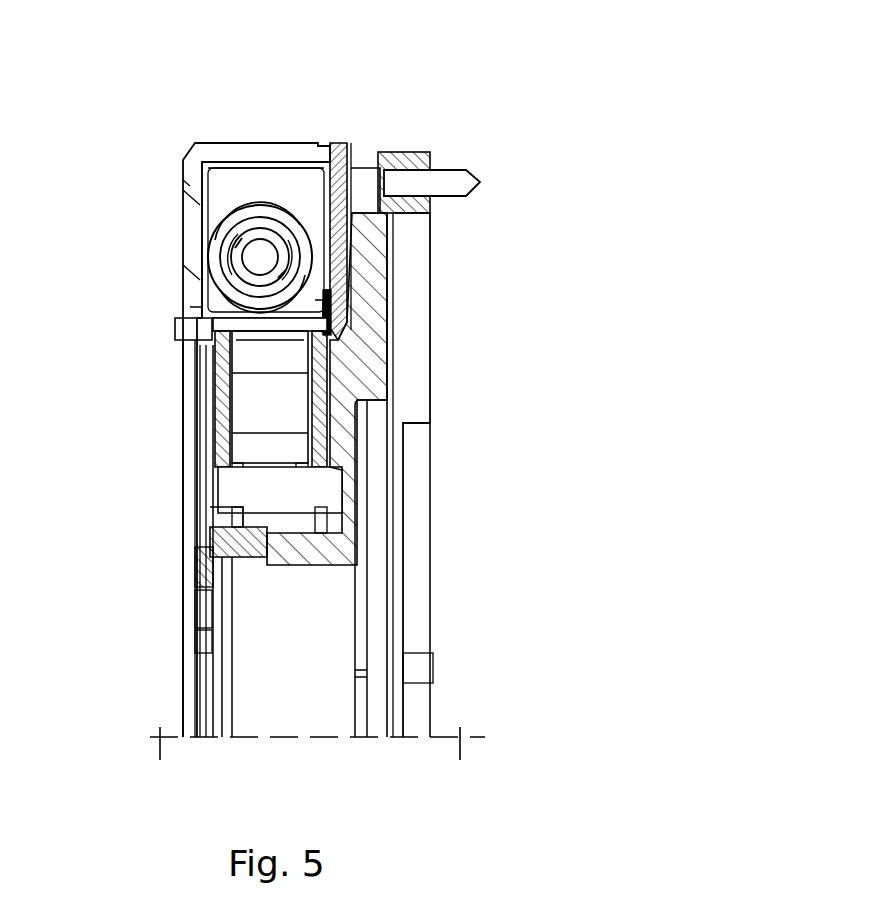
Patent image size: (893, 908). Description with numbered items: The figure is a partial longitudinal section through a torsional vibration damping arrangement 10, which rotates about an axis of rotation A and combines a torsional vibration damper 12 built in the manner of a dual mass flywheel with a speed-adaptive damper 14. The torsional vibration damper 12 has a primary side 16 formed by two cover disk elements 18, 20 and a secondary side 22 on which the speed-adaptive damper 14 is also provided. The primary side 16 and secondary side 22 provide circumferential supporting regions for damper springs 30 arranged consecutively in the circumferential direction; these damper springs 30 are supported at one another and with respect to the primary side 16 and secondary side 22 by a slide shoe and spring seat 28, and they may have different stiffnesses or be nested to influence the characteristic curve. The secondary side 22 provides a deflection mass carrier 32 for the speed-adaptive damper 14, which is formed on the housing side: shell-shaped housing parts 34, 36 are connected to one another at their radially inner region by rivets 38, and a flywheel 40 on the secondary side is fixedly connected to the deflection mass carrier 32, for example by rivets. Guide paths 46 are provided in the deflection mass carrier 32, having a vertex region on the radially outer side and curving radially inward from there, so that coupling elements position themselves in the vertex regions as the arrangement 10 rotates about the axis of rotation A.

The torsional vibration damping arrangement 10 is at (425, 102).
The torsional vibration damper 12 is at (150, 160).
The speed-adaptive damper 14 is at (343, 386).
The primary side 16 is at (156, 274).
The cover disk element 18 is at (195, 211).
The cover disk element 20 is at (340, 150).
The secondary side 22 is at (193, 486).
The slide shoe and spring seat 28 is at (245, 178).
The damper spring 30 is at (265, 215).
The deflection mass carrier 32 is at (345, 292).
The housing part 34 is at (193, 378).
The housing part 36 is at (330, 446).
The rivet 38 is at (318, 490).
The flywheel 40 is at (430, 165).
The guide path 46 is at (365, 416).
The axis of rotation A is at (290, 740).